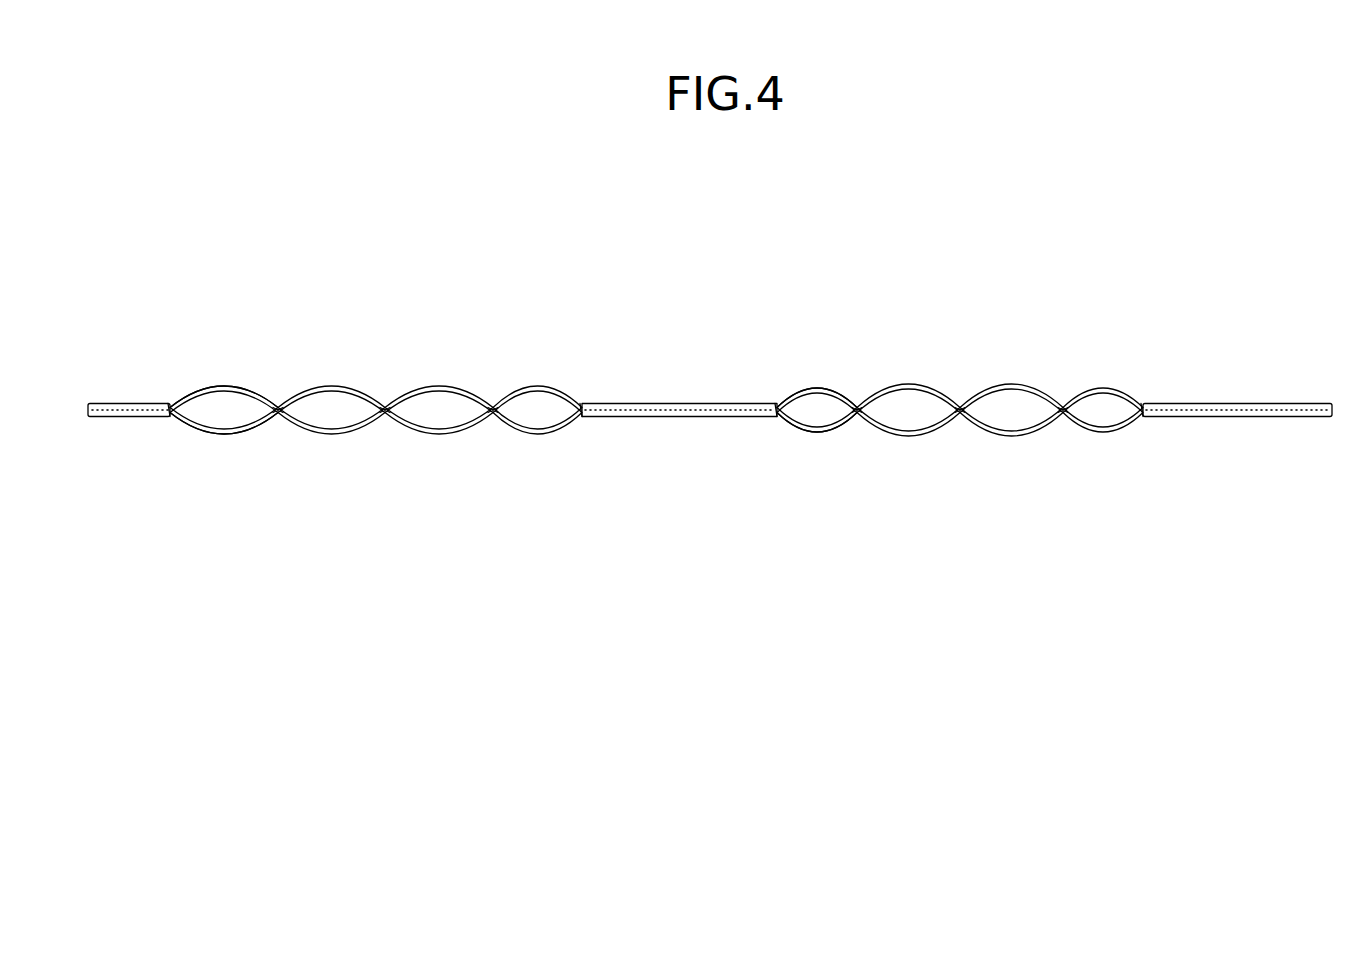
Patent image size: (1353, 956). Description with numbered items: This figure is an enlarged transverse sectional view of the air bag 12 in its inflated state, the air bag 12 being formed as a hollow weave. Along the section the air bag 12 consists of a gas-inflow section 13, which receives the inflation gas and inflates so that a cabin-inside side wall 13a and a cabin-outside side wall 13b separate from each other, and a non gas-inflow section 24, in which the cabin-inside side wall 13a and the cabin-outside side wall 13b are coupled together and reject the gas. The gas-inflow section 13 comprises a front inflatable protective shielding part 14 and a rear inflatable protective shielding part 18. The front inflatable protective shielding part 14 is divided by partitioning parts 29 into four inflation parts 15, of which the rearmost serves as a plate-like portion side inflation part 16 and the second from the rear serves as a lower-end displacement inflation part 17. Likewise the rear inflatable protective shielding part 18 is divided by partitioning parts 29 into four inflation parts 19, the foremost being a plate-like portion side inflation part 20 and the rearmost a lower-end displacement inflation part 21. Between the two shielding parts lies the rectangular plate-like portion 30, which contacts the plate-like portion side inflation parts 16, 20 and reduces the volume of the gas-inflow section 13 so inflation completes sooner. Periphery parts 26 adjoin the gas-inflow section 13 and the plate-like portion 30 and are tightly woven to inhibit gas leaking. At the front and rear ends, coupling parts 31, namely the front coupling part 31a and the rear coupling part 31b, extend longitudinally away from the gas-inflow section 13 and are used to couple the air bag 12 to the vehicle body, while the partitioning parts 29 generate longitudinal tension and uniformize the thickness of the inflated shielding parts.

The air bag 12 is at (1163, 380).
The gas-inflow section 13 is at (993, 240).
The cabin-inside side wall 13a is at (222, 437).
The cabin-outside side wall 13b is at (183, 396).
The front inflatable protective shielding part 14 is at (200, 297).
The inflation part 15 is at (233, 397).
The plate-like portion side inflation part 16 is at (549, 397).
The lower-end displacement inflation part 17 is at (451, 397).
The rear inflatable protective shielding part 18 is at (777, 297).
The inflation part 19 is at (827, 397).
The plate-like portion side inflation part 20 is at (916, 395).
The lower-end displacement inflation part 21 is at (1112, 397).
The non gas-inflow section 24 is at (62, 518).
The periphery parts 26 is at (167, 428).
The partitioning parts 29 is at (278, 420).
The plate-like portion 30 is at (668, 420).
The coupling parts 31 is at (710, 461).
The front coupling part 31a is at (120, 425).
The rear coupling part 31b is at (1222, 422).